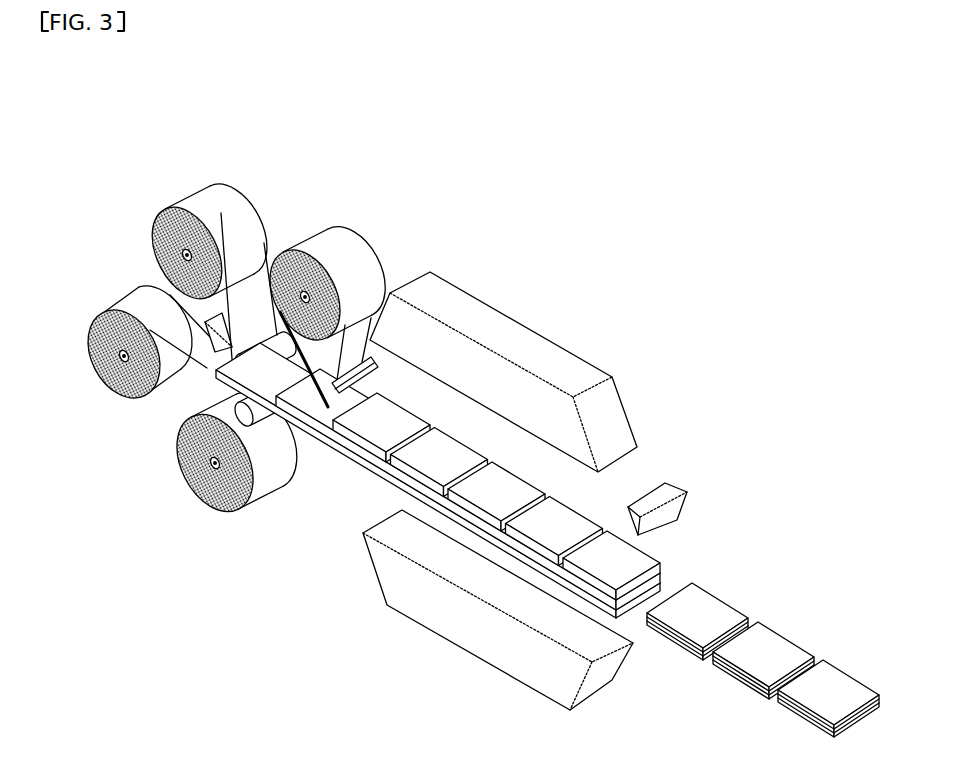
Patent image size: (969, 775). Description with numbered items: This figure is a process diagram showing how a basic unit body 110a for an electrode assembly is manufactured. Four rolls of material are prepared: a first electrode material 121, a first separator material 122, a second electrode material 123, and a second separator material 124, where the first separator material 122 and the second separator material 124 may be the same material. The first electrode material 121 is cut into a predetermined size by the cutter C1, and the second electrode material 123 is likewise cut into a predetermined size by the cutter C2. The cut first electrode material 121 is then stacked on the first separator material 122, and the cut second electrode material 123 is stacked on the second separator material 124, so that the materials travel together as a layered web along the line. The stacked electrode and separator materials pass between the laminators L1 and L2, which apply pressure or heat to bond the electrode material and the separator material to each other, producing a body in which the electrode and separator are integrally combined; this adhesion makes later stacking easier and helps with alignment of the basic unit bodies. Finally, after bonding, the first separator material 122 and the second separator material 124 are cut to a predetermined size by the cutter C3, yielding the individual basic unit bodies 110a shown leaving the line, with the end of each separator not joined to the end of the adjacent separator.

The first electrode material 121 is at (337, 247).
The first separator material 122 is at (218, 207).
The second electrode material 123 is at (128, 400).
The second separator material 124 is at (267, 480).
The cutter C1 is at (380, 372).
The cutter C2 is at (168, 292).
The cutter C3 is at (667, 482).
The laminator L1 is at (532, 347).
The laminator L2 is at (458, 633).
The basic unit body 110a is at (830, 683).